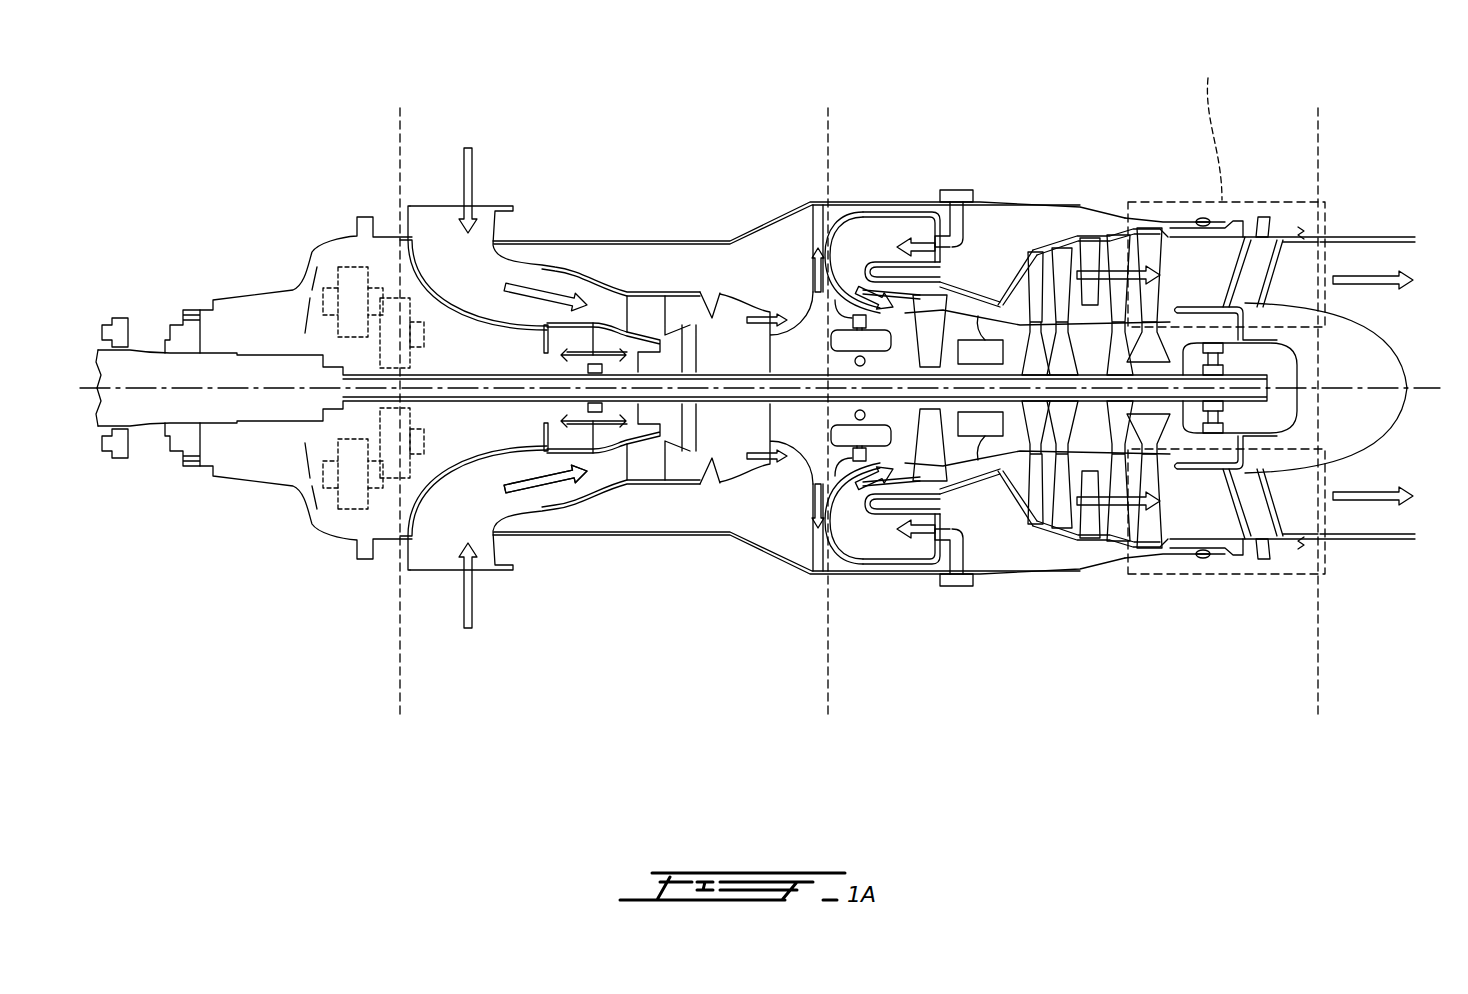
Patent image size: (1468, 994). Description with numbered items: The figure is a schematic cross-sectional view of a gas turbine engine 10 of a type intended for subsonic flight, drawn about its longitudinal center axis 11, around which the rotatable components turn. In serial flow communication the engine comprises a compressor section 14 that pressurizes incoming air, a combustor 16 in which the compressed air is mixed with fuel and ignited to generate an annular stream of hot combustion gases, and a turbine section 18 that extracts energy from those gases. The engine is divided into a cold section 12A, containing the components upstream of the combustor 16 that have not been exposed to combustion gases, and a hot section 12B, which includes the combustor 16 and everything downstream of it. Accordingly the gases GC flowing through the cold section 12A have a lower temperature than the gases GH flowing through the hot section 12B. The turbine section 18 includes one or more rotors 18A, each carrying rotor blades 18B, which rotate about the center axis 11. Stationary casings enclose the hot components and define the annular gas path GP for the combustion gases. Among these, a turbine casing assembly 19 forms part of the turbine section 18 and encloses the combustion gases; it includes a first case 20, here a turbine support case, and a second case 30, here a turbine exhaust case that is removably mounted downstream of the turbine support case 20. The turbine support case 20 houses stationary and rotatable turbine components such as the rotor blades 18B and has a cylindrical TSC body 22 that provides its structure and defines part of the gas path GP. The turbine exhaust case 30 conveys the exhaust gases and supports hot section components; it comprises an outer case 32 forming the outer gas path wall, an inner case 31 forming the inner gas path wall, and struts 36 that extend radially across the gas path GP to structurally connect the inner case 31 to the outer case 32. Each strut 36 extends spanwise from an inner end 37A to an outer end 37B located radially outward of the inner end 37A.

The gas turbine engine 10 is at (303, 170).
The longitudinal center axis 11 is at (1424, 398).
The cold section 12A is at (740, 476).
The hot section 12B is at (1133, 458).
The compressor section 14 is at (813, 215).
The combustor 16 is at (866, 220).
The turbine section 18 is at (1013, 314).
The rotor 18A is at (1030, 353).
The rotor blades 18B is at (1101, 349).
The turbine casing assembly 19 is at (1208, 580).
The turbine support case 20 is at (1142, 568).
The TSC body 22 is at (1160, 556).
The turbine exhaust case 30 is at (1333, 552).
The inner case 31 is at (1205, 470).
The outer case 32 is at (1367, 438).
The strut 36 is at (1286, 262).
The inner end 37A is at (1288, 486).
The outer end 37B is at (1276, 232).
The gases flowing through the cold section GC is at (545, 536).
The gases flowing through the hot section GH is at (1093, 500).
The gas path GP is at (1212, 286).